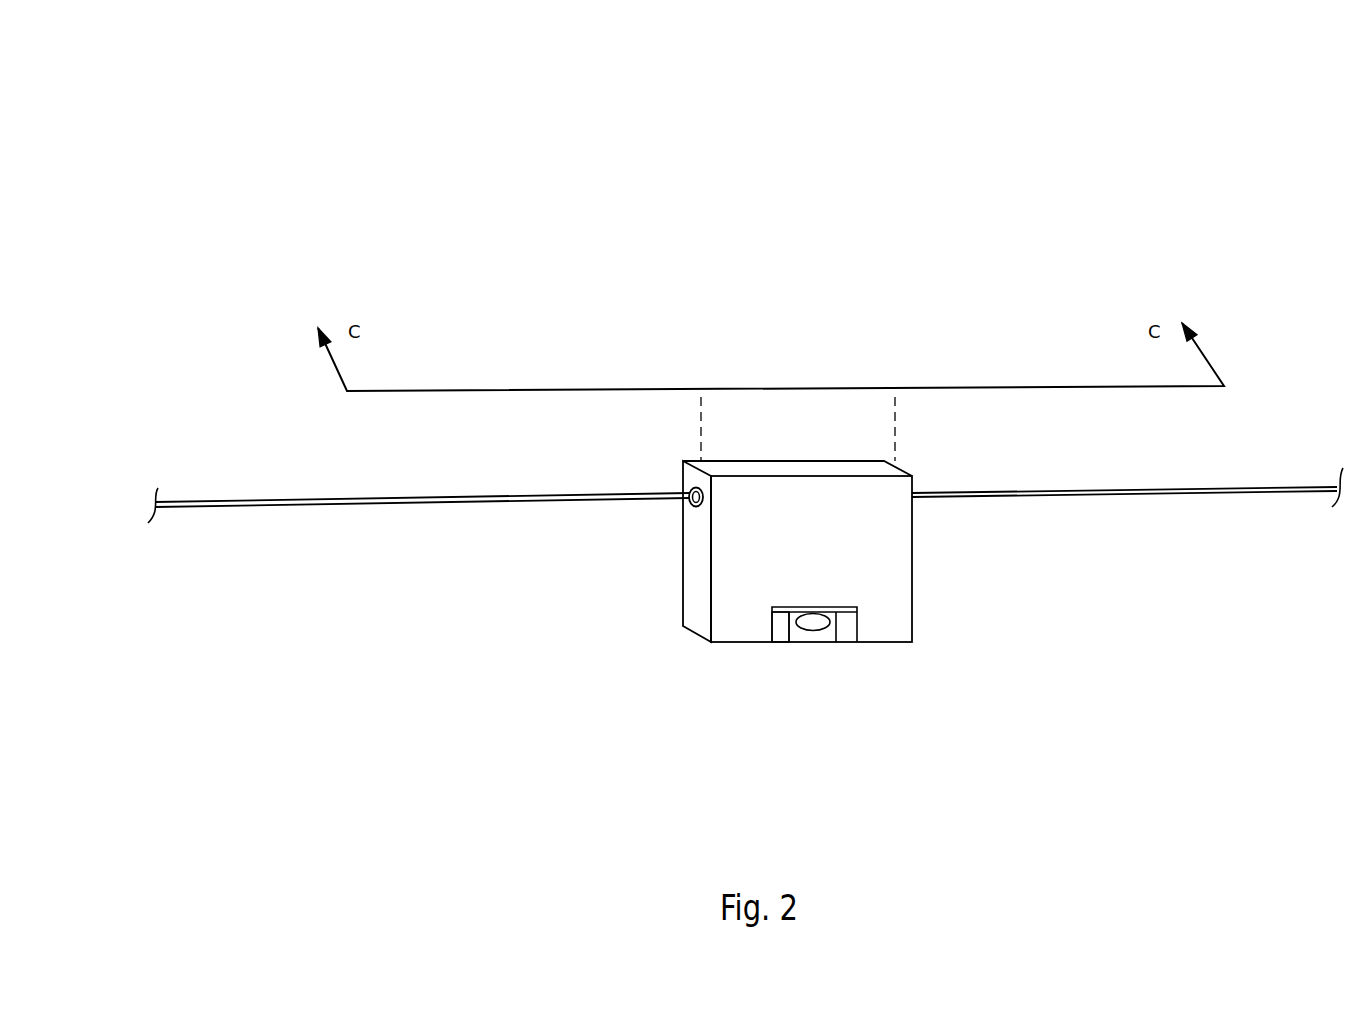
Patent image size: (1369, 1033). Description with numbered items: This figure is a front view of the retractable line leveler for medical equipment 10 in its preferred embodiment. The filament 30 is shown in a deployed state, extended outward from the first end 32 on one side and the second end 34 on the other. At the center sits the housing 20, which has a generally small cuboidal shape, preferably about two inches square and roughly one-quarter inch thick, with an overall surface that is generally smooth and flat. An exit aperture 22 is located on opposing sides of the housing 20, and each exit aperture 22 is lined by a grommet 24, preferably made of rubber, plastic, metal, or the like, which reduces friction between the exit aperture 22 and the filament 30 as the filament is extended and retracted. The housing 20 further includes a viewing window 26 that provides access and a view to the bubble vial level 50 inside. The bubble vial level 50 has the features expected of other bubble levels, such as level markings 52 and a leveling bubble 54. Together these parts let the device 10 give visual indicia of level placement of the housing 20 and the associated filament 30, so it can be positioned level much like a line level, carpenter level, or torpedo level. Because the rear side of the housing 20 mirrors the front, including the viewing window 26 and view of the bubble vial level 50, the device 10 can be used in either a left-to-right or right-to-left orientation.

The retractable line leveler for medical equipment 10 is at (1280, 187).
The housing 20 is at (697, 624).
The exit aperture 22 is at (690, 505).
The grommet 24 is at (692, 492).
The viewing window 26 is at (847, 610).
The filament 30 is at (290, 498).
The first end 32 is at (159, 560).
The second end 34 is at (1346, 543).
The bubble vial level 50 is at (782, 637).
The level markings 52 is at (790, 628).
The leveling bubble 54 is at (815, 630).